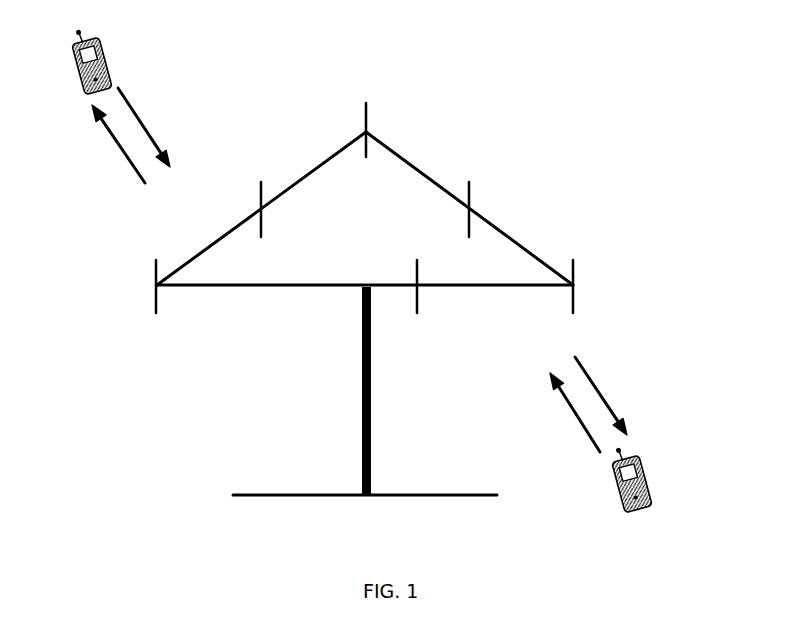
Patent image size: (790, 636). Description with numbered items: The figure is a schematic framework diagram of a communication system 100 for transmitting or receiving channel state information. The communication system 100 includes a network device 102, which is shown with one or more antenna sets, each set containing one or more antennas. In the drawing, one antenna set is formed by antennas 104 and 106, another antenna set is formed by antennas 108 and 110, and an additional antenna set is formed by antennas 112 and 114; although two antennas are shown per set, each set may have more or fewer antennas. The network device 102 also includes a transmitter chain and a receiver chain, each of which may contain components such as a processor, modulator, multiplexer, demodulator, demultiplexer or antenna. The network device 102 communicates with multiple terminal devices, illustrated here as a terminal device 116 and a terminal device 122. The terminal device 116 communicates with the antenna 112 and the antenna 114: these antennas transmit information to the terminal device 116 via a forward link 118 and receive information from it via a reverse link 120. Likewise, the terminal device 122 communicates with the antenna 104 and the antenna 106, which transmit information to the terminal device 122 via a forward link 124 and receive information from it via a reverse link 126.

The communication system 100 is at (571, 73).
The network device 102 is at (372, 437).
The antenna 104 is at (157, 302).
The antenna 106 is at (262, 212).
The antenna 108 is at (367, 110).
The antenna 110 is at (470, 185).
The antenna 112 is at (575, 270).
The antenna 114 is at (418, 302).
The terminal device 116 is at (648, 478).
The forward link 118 is at (602, 392).
The reverse link 120 is at (585, 426).
The terminal device 122 is at (108, 62).
The forward link 124 is at (126, 158).
The reverse link 126 is at (143, 122).